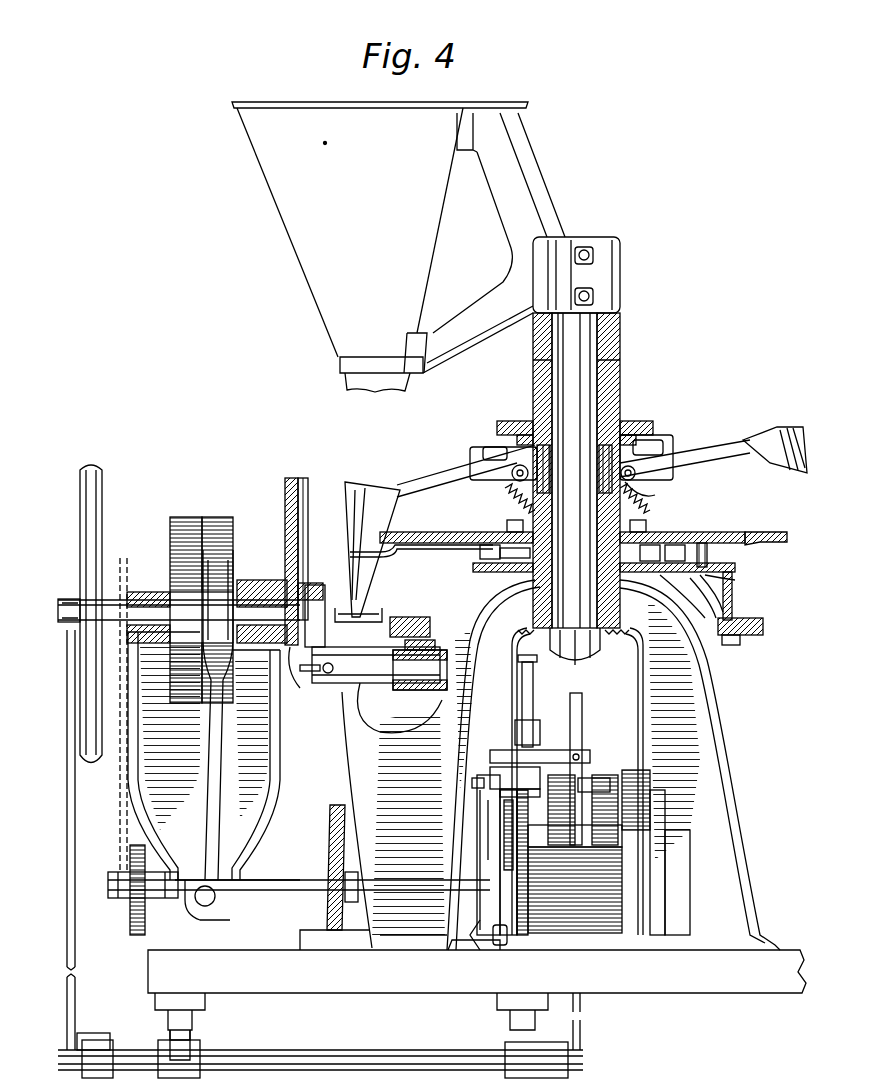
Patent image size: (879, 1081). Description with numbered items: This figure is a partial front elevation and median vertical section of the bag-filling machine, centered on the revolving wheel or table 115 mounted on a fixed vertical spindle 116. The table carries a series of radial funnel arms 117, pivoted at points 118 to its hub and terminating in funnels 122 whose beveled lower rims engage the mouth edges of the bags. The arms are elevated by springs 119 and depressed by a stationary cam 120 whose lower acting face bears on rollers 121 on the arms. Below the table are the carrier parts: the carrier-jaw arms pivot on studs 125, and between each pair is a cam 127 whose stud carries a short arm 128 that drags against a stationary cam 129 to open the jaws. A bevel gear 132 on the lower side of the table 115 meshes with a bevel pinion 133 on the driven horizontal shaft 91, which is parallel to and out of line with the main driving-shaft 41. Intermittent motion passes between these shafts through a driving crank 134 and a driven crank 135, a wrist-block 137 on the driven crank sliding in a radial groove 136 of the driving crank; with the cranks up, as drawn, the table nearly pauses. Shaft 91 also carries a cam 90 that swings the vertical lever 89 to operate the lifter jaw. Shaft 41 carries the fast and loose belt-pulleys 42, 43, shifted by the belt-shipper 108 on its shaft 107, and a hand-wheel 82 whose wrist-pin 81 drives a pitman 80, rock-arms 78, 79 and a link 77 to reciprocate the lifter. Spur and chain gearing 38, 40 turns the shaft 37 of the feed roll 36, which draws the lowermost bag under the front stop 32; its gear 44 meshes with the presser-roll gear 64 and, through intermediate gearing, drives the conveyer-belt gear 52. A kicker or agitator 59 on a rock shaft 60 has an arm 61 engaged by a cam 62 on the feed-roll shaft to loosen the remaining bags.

The fixed vertical spindle 116 is at (590, 342).
The stationary cam 120 is at (508, 424).
The rollers 121 is at (490, 450).
The radial funnel arms 117 is at (687, 462).
The funnels 122 is at (783, 440).
The pivot points 118 is at (516, 500).
The springs 119 is at (655, 495).
The wheel or table 115 is at (568, 538).
The cam 127 is at (732, 584).
The short arm 128 is at (733, 600).
The stationary cam 129 is at (757, 628).
The studs 125 is at (742, 641).
The bevel gear 132 is at (727, 645).
The cam 90 is at (537, 652).
The vertical lever 89 is at (530, 704).
The front stop 32 is at (582, 720).
The gear 52 is at (495, 780).
The arm 61 is at (480, 848).
The gear 64 is at (515, 828).
The gear 44 is at (522, 935).
The feed roll 36 is at (588, 922).
The kicker or agitator 59 is at (593, 818).
The rock shaft 60 is at (607, 778).
The cam 62 is at (503, 927).
The driven crank 135 is at (318, 648).
The bevel pinion 133 is at (423, 693).
The driven horizontal shaft 91 is at (410, 692).
The driving crank 134 is at (292, 479).
The radial groove 136 is at (304, 493).
The wrist-block 137 is at (305, 586).
The main driving-shaft 41 is at (141, 605).
The wrist-pin 81 is at (62, 598).
The hand-wheel 82 is at (80, 531).
The loose belt-pulley 43 is at (182, 518).
The fast belt-pulley 42 is at (216, 522).
The belt-shipper 108 is at (233, 577).
The chain 40 is at (119, 817).
The spur gear 38 is at (136, 935).
The shaft 37 is at (281, 882).
The shaft 107 is at (205, 898).
The pitman 80 is at (65, 910).
The rock-arm 79 is at (100, 1033).
The link 77 is at (583, 1025).
The rock-arm 78 is at (588, 1053).